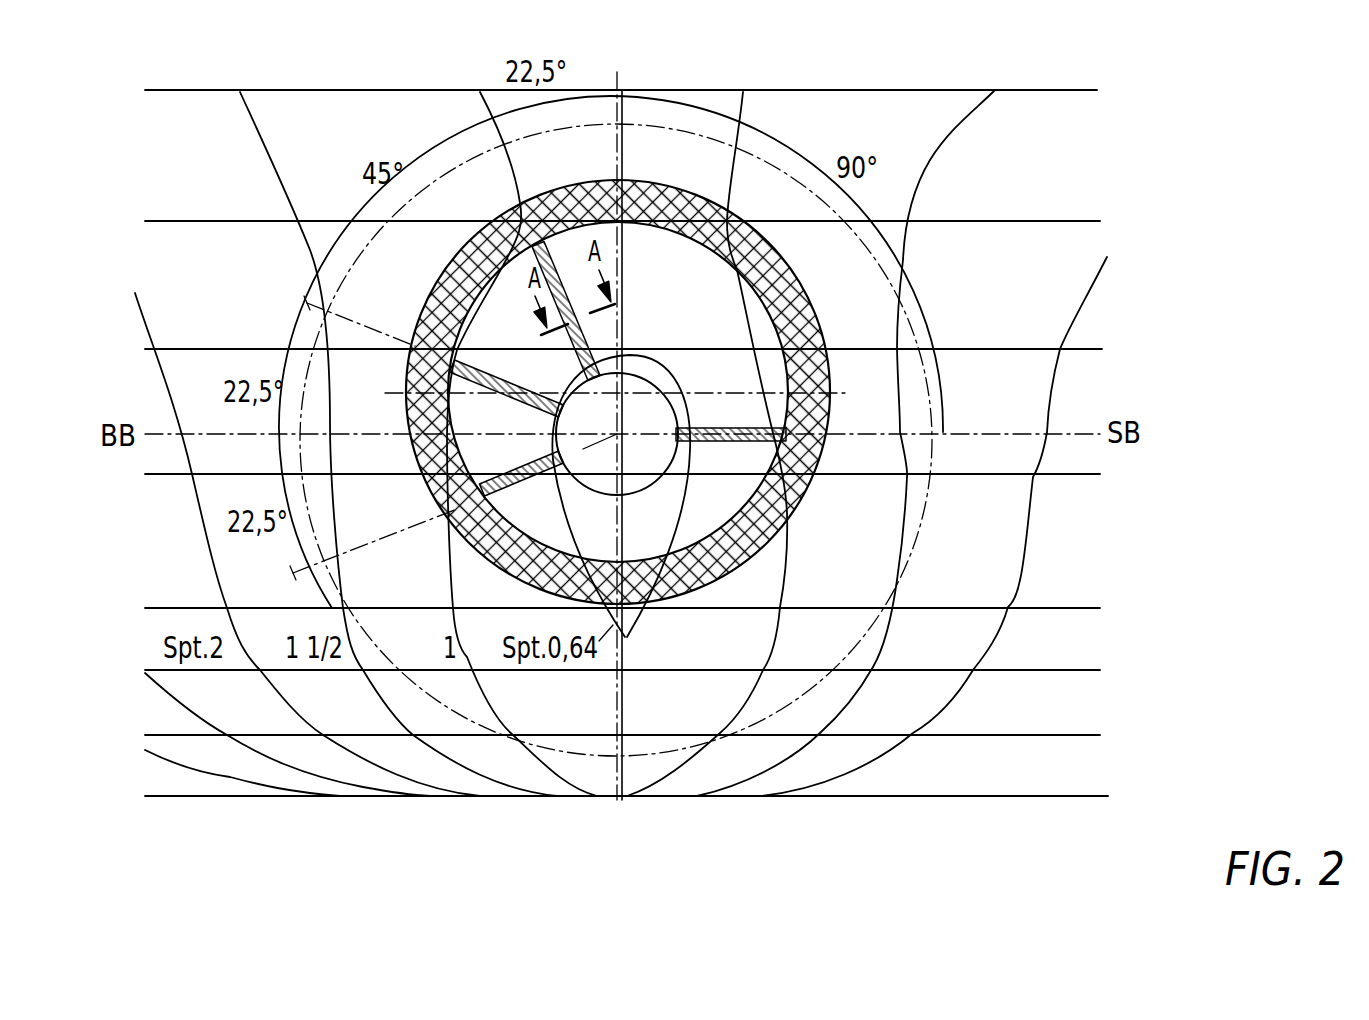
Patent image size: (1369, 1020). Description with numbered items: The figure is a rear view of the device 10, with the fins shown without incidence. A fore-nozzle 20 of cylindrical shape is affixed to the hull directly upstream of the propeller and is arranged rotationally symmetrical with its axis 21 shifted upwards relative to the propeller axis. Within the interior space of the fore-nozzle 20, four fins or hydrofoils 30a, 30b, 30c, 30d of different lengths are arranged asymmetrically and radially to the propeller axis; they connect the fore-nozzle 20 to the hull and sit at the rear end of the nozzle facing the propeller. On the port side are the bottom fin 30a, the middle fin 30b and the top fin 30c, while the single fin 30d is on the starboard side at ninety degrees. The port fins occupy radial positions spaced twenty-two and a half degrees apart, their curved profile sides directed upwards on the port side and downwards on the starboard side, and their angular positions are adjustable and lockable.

The device 10 is at (768, 198).
The fore-nozzle 20 is at (817, 297).
The axis 21 is at (703, 315).
The bottom fin 30a is at (487, 550).
The middle fin 30b is at (510, 367).
The top fin 30c is at (566, 236).
The fin 30d is at (713, 442).